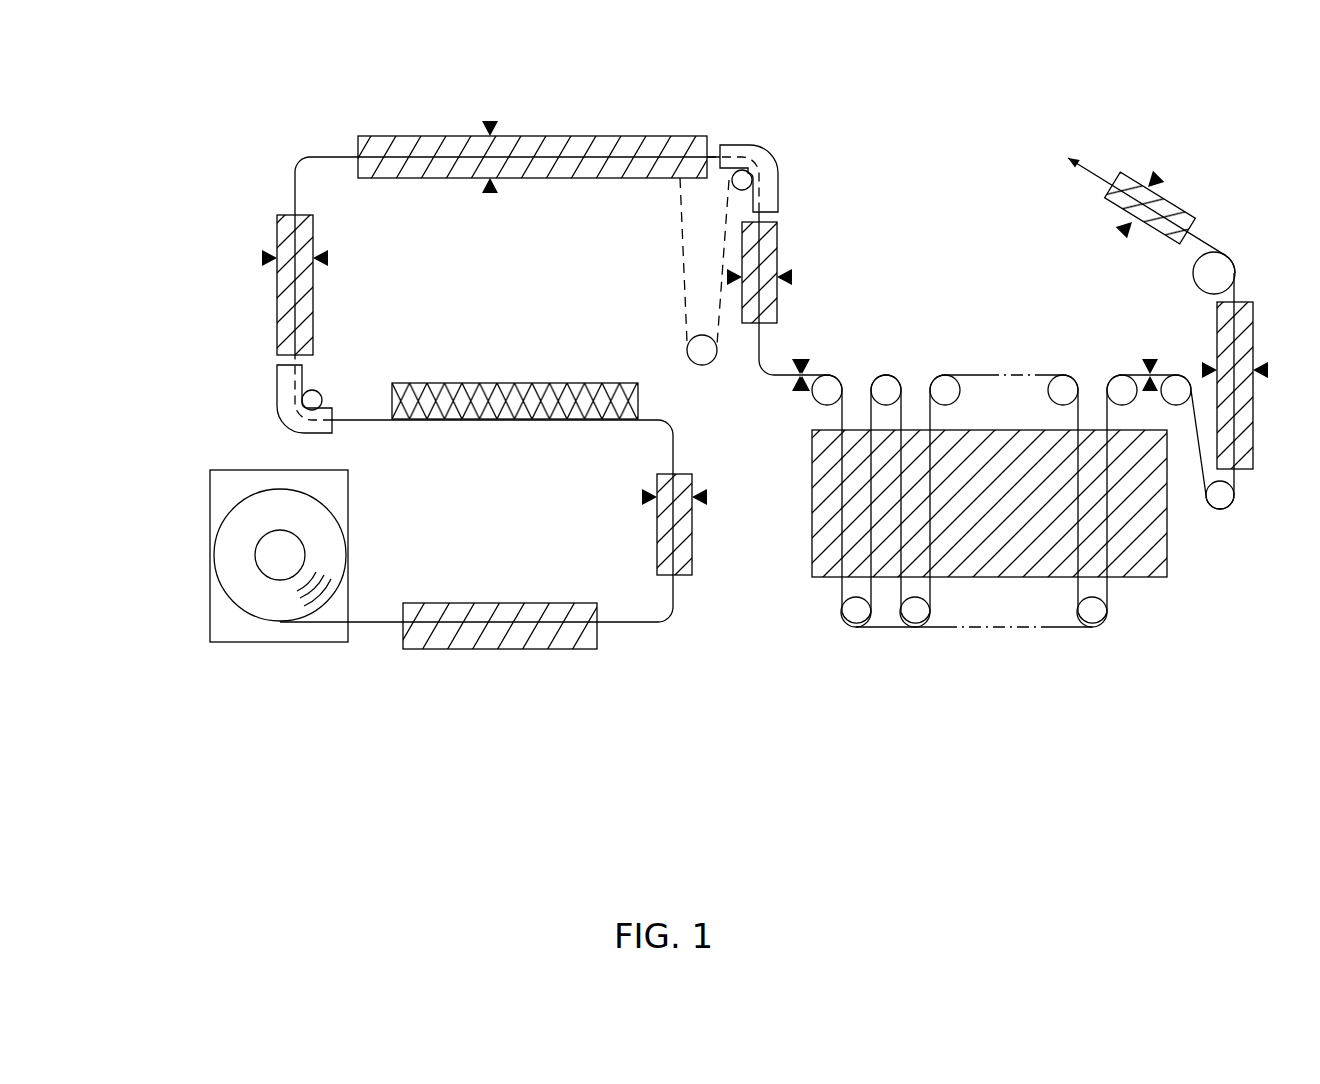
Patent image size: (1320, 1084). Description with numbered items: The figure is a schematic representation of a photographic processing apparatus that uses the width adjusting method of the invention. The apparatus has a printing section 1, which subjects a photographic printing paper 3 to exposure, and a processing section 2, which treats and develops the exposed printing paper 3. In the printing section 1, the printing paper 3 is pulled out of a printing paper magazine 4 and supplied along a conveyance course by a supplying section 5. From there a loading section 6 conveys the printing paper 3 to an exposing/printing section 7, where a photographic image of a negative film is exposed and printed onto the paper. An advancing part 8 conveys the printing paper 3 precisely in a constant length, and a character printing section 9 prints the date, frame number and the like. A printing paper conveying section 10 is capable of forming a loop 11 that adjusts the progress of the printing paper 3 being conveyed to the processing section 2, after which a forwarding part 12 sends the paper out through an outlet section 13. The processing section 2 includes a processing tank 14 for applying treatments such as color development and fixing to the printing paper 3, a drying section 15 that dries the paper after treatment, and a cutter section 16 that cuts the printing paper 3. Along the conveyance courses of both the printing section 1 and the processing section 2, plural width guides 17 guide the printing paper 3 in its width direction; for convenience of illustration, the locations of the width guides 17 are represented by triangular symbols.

The printing section 1 is at (504, 672).
The processing section 2 is at (1058, 698).
The photographic printing paper 3 is at (372, 630).
The printing paper magazine 4 is at (225, 546).
The supplying section 5 is at (460, 602).
The loading section 6 is at (657, 532).
The exposing/printing section 7 is at (530, 383).
The advancing part 8 is at (277, 395).
The character printing section 9 is at (275, 322).
The printing paper conveying section 10 is at (556, 135).
The loop 11 is at (682, 248).
The forwarding part 12 is at (768, 148).
The outlet section 13 is at (778, 240).
The processing tank 14 is at (995, 545).
The drying section 15 is at (1245, 310).
The cutter section 16 is at (1165, 210).
The width guides 17 is at (490, 120).